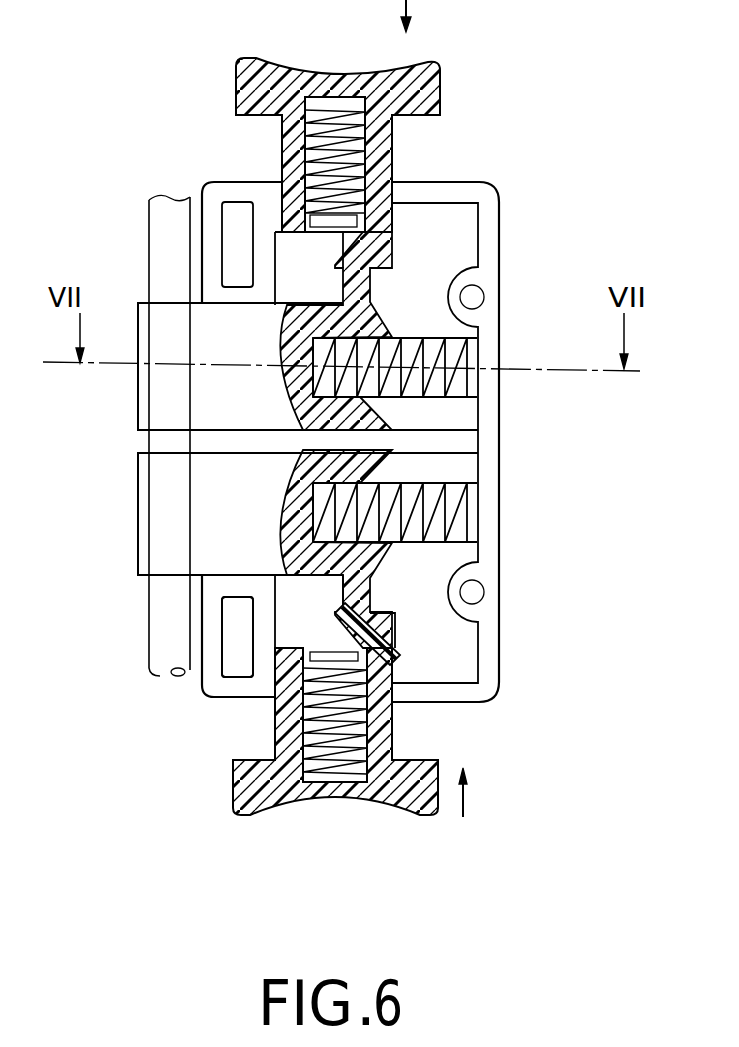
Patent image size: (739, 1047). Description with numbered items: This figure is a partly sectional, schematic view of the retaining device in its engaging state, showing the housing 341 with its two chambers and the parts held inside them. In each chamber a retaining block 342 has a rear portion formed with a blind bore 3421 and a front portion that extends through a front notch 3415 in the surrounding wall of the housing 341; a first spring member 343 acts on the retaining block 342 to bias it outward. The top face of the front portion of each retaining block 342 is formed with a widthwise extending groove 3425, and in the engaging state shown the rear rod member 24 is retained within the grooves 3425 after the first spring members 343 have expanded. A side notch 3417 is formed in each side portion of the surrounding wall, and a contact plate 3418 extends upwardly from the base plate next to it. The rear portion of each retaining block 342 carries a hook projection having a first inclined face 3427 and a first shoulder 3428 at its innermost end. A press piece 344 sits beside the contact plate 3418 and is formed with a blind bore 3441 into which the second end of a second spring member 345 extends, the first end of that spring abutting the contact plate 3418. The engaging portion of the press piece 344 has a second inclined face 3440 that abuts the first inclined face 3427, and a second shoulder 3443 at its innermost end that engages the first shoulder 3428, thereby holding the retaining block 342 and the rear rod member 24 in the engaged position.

The rear rod member 24 is at (160, 272).
The housing 341 is at (495, 402).
The retaining block 342 is at (218, 532).
The first spring member 343 is at (476, 358).
The blind bore 3421 is at (420, 470).
The groove 3425 is at (163, 538).
The front notch 3415 is at (225, 578).
The side notch 3417 is at (270, 657).
The contact plate 3418 is at (275, 700).
The first inclined face 3427 is at (372, 640).
The first shoulder 3428 is at (472, 592).
The second shoulder 3443 is at (395, 683).
The press piece 344 is at (398, 788).
The second spring member 345 is at (388, 740).
The second inclined face 3440 is at (297, 743).
The blind bore 3441 is at (315, 772).